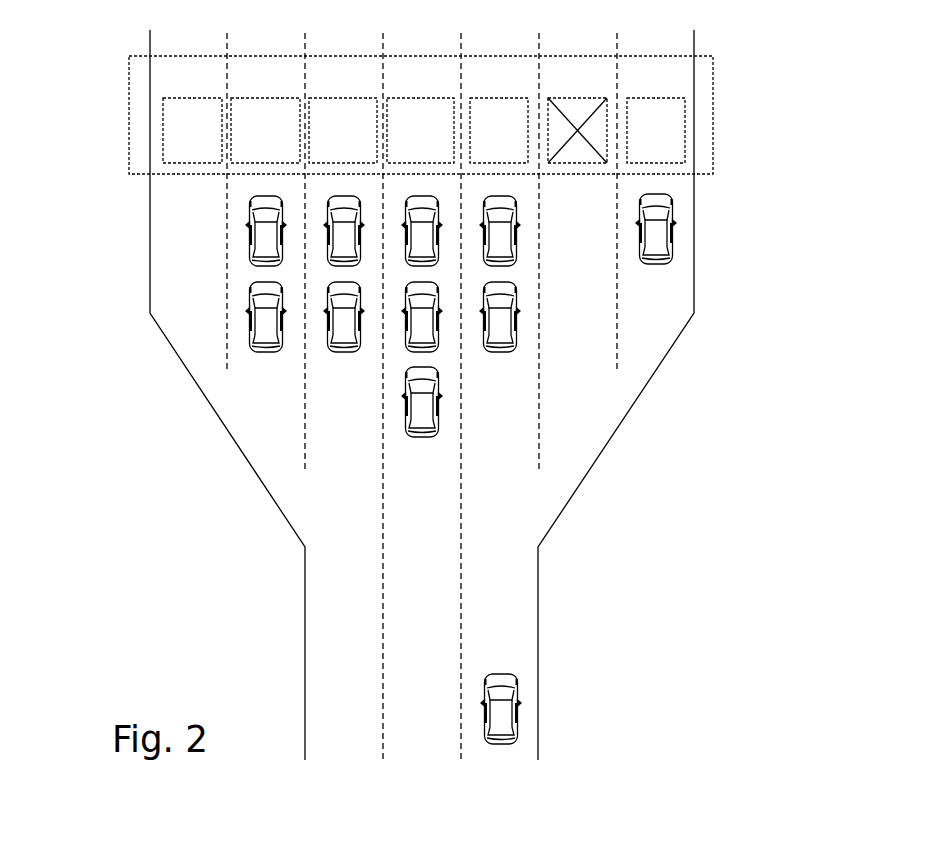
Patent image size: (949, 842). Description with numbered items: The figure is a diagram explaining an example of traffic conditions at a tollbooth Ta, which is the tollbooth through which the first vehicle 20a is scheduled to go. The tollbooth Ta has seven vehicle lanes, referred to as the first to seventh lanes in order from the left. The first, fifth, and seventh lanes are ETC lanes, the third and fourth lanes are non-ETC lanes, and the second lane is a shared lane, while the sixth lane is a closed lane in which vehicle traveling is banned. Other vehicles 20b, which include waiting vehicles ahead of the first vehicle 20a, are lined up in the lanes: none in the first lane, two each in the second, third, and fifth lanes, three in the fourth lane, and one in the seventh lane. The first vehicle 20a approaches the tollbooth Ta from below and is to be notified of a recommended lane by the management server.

The tollbooth Ta is at (713, 118).
The other vehicles 20b is at (717, 188).
The first vehicle 20a is at (521, 698).